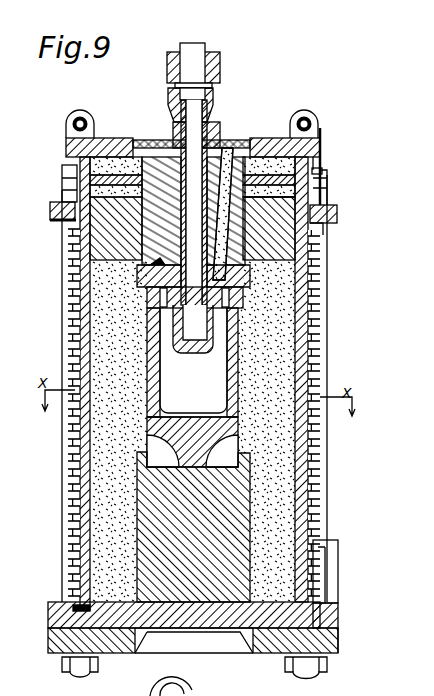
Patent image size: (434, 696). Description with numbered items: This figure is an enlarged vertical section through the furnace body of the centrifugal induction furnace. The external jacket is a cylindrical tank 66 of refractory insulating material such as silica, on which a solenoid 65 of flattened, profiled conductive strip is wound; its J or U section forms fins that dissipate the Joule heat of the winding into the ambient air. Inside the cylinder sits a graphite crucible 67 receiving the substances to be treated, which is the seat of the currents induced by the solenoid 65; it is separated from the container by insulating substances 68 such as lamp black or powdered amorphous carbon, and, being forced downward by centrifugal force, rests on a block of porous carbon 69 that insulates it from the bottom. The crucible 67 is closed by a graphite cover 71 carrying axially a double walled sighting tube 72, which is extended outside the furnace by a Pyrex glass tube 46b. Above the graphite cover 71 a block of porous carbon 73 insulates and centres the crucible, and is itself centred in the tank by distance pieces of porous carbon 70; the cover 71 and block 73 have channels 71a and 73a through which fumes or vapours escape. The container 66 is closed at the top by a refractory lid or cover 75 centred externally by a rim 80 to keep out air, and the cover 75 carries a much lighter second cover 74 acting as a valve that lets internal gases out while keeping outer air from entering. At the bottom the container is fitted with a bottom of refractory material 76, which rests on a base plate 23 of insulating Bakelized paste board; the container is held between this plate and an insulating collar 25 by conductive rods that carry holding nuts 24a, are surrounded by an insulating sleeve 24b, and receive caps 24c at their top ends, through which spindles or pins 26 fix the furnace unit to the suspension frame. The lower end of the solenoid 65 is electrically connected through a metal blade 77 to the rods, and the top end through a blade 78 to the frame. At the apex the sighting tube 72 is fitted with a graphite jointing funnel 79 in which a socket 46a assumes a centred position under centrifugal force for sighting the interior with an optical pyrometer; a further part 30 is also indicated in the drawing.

The Pyrex glass tube 46b is at (192, 50).
The socket 46a is at (220, 60).
The jointing funnel 79 is at (213, 104).
The second cover 74 is at (222, 138).
The double walled sighting tube 72 is at (265, 150).
The lid or cover 75 is at (112, 140).
The spindles or pins 26 is at (85, 115).
The caps 24c is at (318, 126).
The rim 80 is at (318, 166).
The blade 78 is at (52, 205).
The channels 73a is at (270, 198).
The insulating collar 25 is at (338, 217).
The distance pieces of porous carbon 70 is at (270, 246).
The block of porous carbon 73 is at (260, 278).
The graphite cover 71 is at (268, 294).
The channels 71a is at (265, 325).
The solenoid 65 is at (305, 352).
The cylindrical tank 66 is at (310, 361).
The graphite crucible 67 is at (225, 387).
The insulating substances 68 is at (285, 438).
The insulating sleeve 24b is at (326, 467).
The block of porous carbon 69 is at (245, 500).
The metal blade 77 is at (322, 540).
The base plate 23 is at (338, 635).
The holding nuts 24a is at (328, 668).
The bottom of refractory material 76 is at (210, 622).
The bottom fitting 30 is at (195, 692).